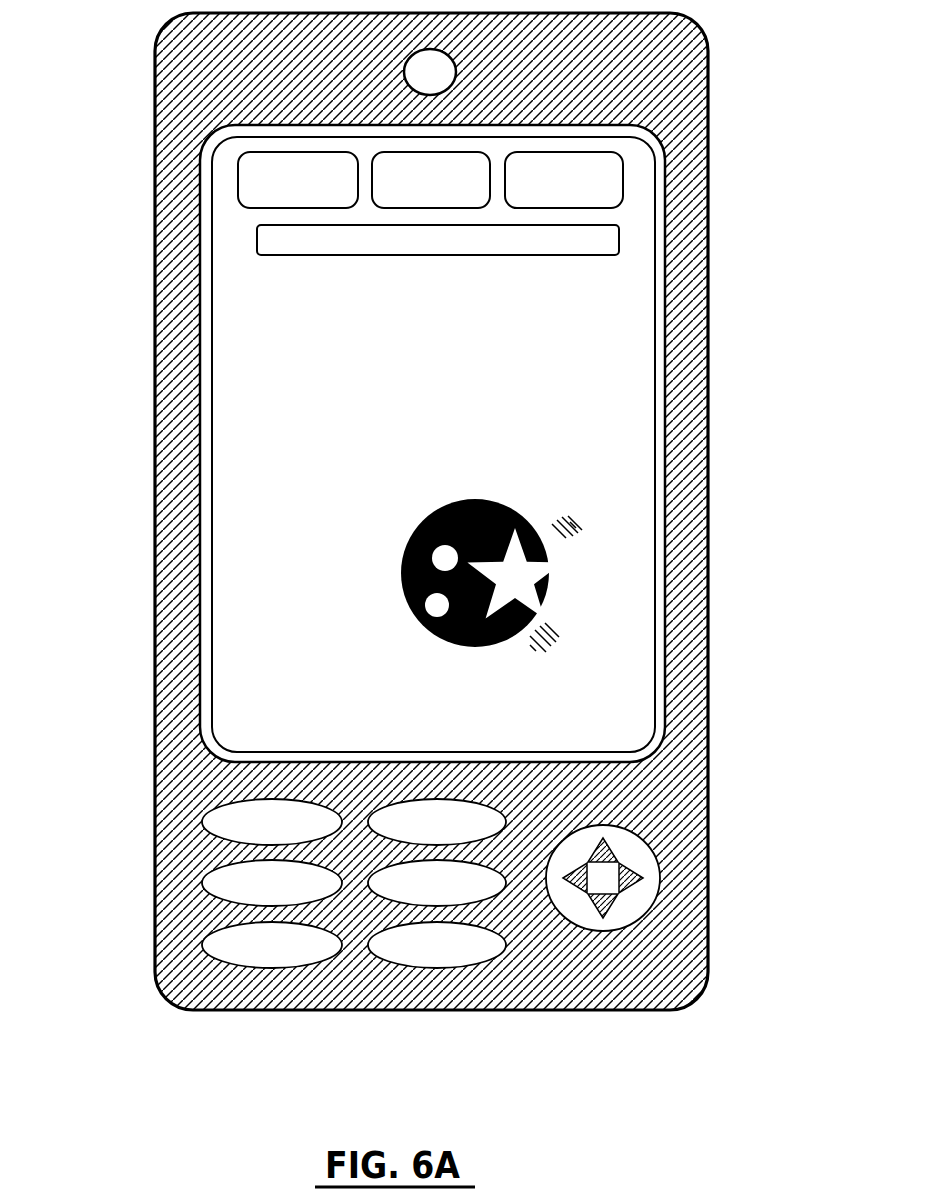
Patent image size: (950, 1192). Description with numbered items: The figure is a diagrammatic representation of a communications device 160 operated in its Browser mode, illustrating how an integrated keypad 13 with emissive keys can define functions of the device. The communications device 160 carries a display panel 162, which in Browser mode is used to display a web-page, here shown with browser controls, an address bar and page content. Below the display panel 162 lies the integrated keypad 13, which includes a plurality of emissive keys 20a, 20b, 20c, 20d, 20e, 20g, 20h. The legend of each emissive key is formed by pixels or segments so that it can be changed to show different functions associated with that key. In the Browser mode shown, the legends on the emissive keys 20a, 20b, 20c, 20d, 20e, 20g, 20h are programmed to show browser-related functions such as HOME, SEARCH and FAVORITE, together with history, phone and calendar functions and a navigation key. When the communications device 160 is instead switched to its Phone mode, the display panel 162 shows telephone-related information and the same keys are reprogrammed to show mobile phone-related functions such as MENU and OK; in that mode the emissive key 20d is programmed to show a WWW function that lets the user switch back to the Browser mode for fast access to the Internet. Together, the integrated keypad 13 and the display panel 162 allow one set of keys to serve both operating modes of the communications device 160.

The integrated keypad 13 is at (726, 774).
The communications device 160 is at (724, 381).
The display panel 162 is at (250, 555).
The emissive key 20a is at (215, 822).
The emissive key 20b is at (212, 883).
The emissive key 20c is at (212, 944).
The emissive key 20d is at (488, 833).
The emissive key 20e is at (437, 883).
The emissive key 20g is at (438, 967).
The emissive key 20h is at (638, 903).